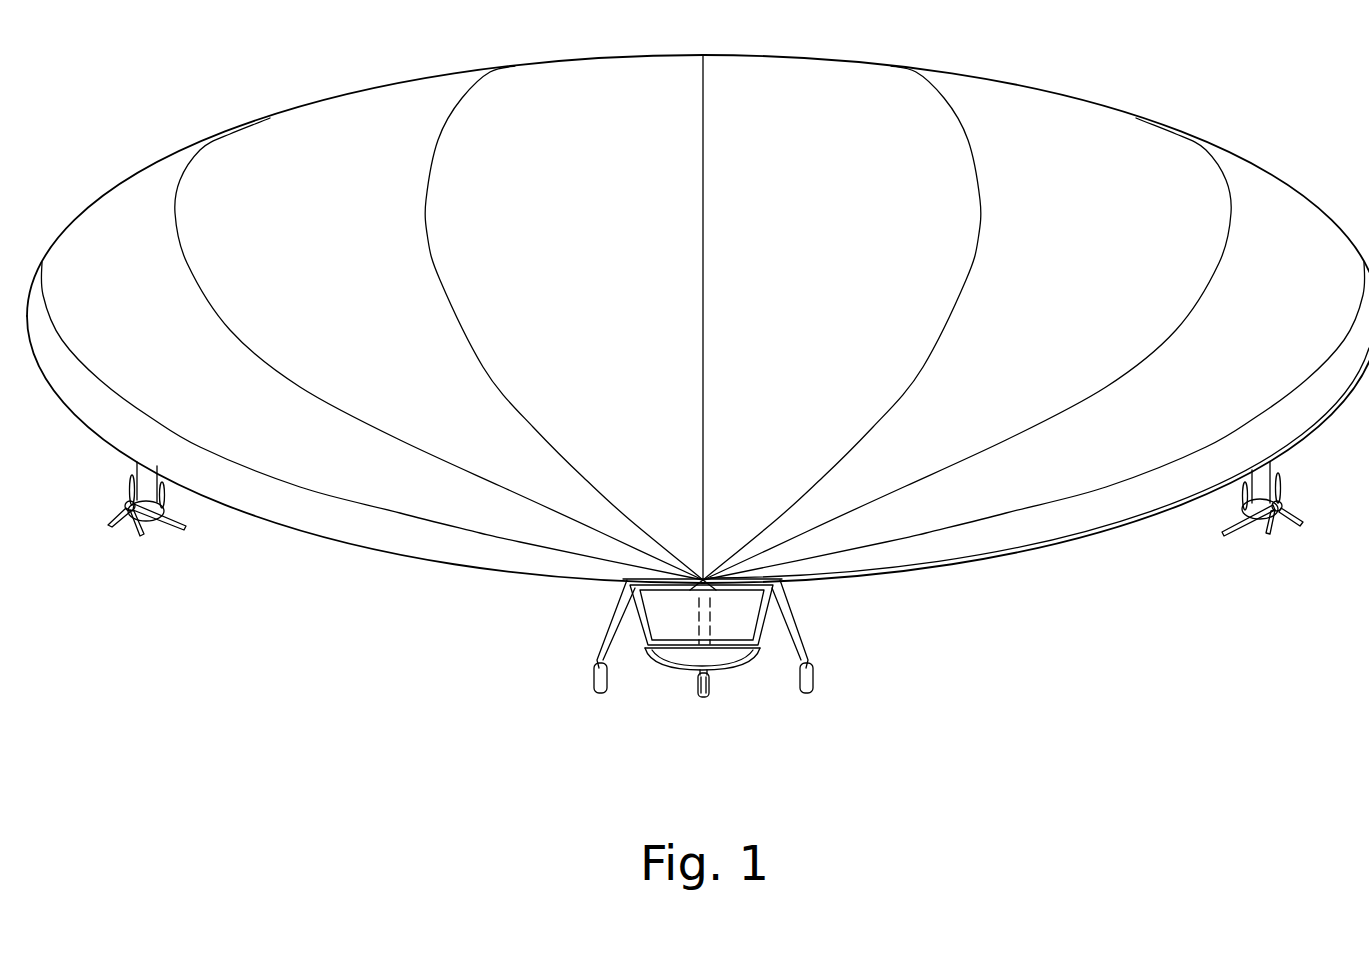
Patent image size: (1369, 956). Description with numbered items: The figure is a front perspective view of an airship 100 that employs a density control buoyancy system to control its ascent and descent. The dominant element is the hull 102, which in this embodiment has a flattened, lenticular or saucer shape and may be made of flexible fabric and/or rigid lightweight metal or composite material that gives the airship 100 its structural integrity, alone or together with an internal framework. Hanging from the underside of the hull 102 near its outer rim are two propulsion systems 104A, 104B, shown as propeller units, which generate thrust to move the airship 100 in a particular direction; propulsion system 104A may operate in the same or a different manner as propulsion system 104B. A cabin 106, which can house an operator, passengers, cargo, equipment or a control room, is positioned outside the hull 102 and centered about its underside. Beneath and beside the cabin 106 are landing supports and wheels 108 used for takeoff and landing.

The airship 100 is at (398, 640).
The hull 102 is at (1010, 552).
The propulsion system 104A is at (1242, 517).
The propulsion system 104B is at (162, 518).
The cabin 106 is at (743, 660).
The landing supports and wheels 108 is at (807, 643).